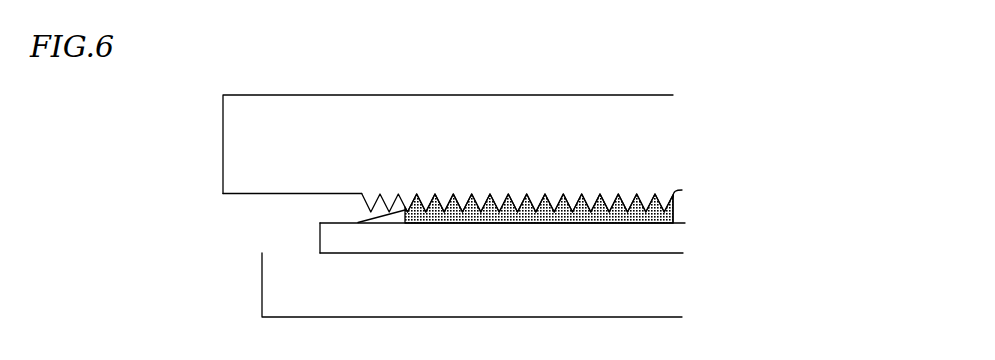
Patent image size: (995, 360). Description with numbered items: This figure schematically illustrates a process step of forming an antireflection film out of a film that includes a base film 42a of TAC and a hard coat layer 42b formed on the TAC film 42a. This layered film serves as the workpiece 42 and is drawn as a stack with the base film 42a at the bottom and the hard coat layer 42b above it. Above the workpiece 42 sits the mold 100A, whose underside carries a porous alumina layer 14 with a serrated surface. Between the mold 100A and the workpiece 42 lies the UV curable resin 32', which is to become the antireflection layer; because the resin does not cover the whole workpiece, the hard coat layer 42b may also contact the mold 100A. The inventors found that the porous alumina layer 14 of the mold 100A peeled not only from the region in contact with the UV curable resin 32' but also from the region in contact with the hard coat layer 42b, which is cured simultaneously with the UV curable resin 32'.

The mold 100A is at (640, 63).
The porous alumina layer 14 is at (660, 216).
The UV curable resin 32' is at (433, 222).
The workpiece 42 is at (405, 270).
The hard coat layer 42b is at (332, 237).
The base film 42a is at (278, 288).